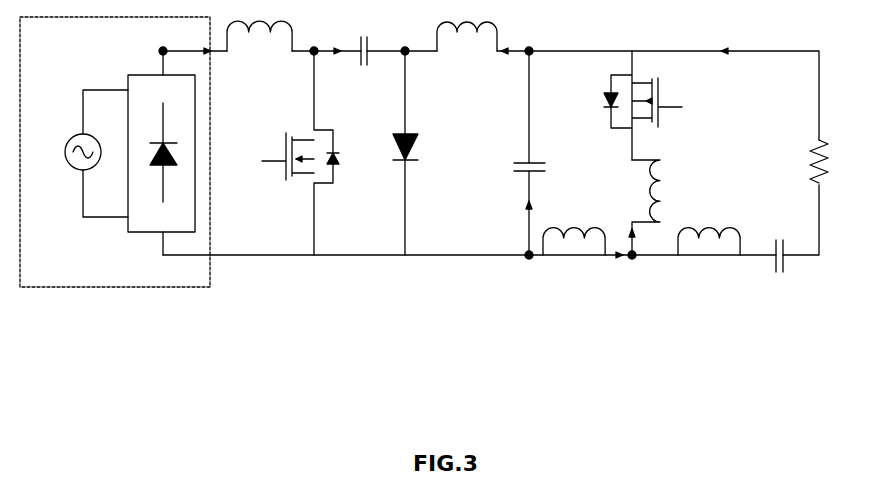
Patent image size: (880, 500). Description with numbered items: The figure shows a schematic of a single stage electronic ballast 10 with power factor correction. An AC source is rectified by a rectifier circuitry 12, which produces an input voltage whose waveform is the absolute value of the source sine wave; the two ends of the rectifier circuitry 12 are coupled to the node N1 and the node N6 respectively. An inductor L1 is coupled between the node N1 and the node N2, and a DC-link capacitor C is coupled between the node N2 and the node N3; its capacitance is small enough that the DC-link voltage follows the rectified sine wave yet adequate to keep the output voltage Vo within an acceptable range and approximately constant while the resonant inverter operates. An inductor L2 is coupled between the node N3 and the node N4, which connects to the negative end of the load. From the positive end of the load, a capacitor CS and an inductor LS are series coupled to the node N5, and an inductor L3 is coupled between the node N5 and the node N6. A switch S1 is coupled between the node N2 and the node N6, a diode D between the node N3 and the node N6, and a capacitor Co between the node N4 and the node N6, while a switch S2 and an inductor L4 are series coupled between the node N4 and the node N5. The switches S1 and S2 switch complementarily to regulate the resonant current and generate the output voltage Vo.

The single stage electronic ballast 10 is at (500, 183).
The rectifier circuitry 12 is at (147, 288).
The inductor L1 is at (259, 28).
The inductor L2 is at (467, 28).
The inductor L3 is at (574, 232).
The inductor L4 is at (658, 207).
The inductor LS is at (709, 232).
The DC-link capacitor C is at (365, 39).
The capacitor Co is at (539, 153).
The capacitor CS is at (778, 245).
The switch S1 is at (300, 153).
The switch S2 is at (643, 105).
The diode D is at (415, 153).
The output voltage Vo is at (829, 161).
The node N1 is at (161, 42).
The node N2 is at (313, 42).
The node N3 is at (408, 42).
The node N4 is at (537, 42).
The node N5 is at (632, 267).
The node N6 is at (527, 269).